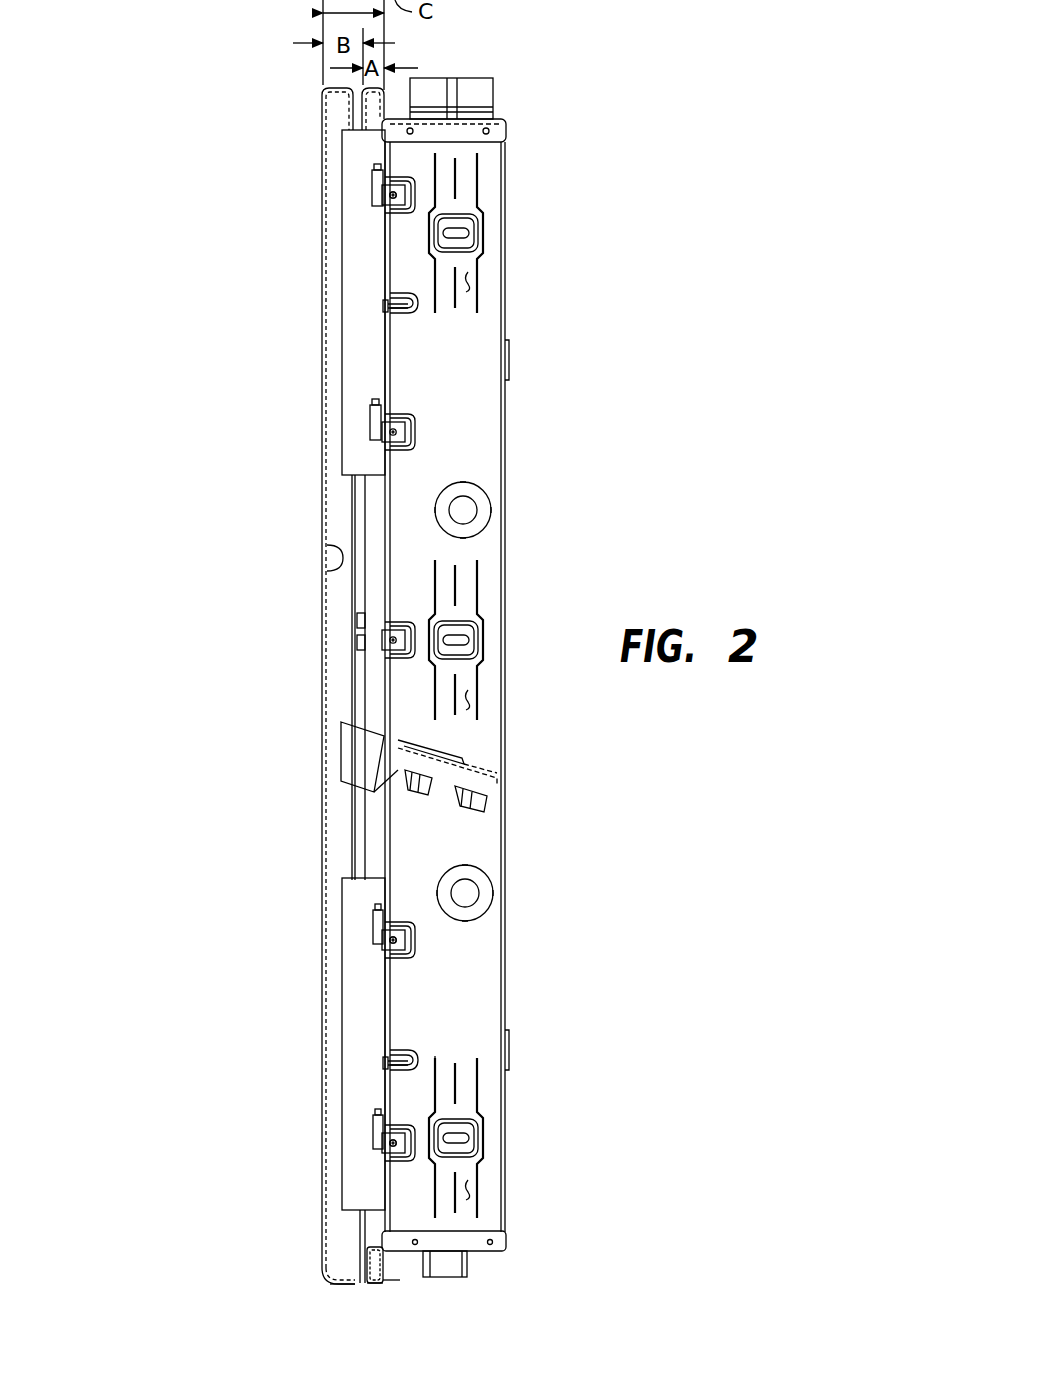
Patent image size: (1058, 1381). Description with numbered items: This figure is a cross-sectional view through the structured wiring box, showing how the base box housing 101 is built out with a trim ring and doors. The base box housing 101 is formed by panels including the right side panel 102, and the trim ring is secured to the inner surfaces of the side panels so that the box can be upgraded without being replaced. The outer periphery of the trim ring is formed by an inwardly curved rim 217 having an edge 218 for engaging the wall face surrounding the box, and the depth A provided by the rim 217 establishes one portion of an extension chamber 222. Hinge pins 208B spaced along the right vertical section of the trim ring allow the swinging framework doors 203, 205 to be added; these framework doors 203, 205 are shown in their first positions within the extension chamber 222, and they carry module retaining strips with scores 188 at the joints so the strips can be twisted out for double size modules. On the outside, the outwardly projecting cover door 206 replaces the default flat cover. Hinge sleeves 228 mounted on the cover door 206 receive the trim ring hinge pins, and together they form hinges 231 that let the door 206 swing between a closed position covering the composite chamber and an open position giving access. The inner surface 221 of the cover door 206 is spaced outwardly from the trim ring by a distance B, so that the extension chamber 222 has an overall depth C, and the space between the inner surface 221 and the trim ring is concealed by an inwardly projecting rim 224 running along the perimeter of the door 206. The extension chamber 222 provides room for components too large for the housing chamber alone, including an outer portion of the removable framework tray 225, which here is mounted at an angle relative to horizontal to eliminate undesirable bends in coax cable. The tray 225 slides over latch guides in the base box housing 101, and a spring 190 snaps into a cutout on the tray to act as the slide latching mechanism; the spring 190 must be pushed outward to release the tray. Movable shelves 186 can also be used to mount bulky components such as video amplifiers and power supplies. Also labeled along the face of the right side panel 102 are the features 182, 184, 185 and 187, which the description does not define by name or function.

The base box housing 101 is at (509, 162).
The right side panel 102 is at (467, 399).
The slot 182 is at (468, 284).
The receptacle 184 is at (468, 236).
The rib 185 is at (436, 1068).
The movable shelves 186 is at (478, 1100).
The groove 187 is at (460, 1082).
The scores 188 is at (460, 1208).
The spring 190 is at (468, 755).
The framework door 203 is at (342, 414).
The framework door 205 is at (342, 1033).
The cover door 206 is at (324, 524).
The hinge pins 208B is at (375, 172).
The inwardly curved rim 217 is at (375, 1285).
The edge 218 is at (388, 1283).
The inner surface 221 is at (340, 569).
The extension chamber 222 is at (345, 1222).
The inwardly projecting rim 224 is at (338, 1288).
The framework tray 225 is at (341, 748).
The hinge sleeves 228 is at (372, 182).
The hinges 231 is at (372, 192).